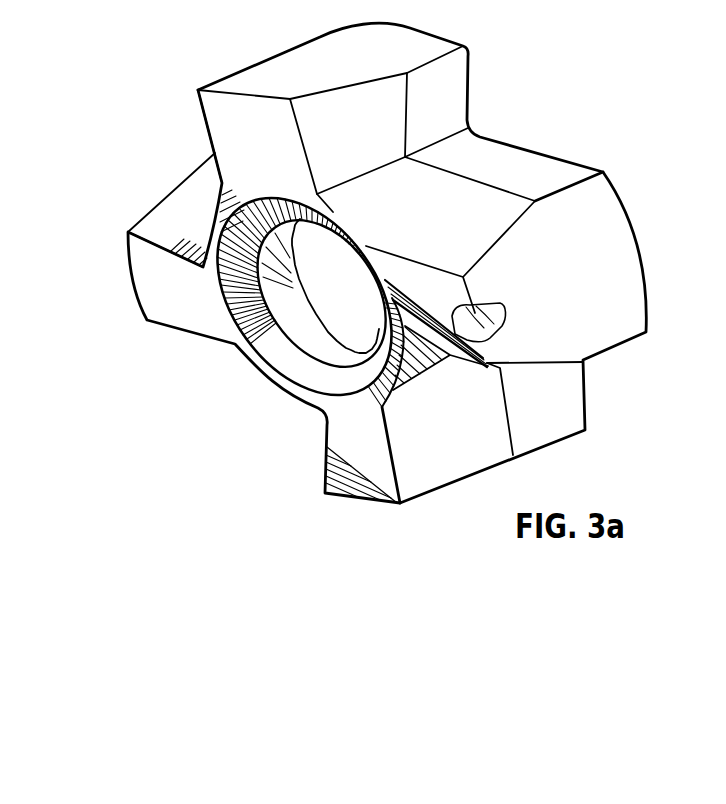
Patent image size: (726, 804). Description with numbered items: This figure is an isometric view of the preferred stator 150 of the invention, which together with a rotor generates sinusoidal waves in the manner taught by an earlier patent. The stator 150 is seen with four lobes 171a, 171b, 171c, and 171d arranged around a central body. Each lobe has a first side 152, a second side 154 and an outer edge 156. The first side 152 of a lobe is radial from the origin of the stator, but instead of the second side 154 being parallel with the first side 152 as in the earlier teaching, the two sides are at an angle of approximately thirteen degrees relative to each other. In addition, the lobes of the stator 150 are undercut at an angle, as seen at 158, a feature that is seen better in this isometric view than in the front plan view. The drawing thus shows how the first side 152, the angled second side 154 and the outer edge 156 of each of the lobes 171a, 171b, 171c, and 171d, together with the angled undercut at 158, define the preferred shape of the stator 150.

The stator 150 is at (122, 188).
The first side 152 is at (455, 111).
The second side 154 is at (200, 108).
The outer edge 156 is at (383, 67).
The undercut 158 is at (487, 190).
The lobe 171a is at (137, 268).
The lobe 171b is at (211, 121).
The lobe 171c is at (595, 268).
The lobe 171d is at (466, 429).